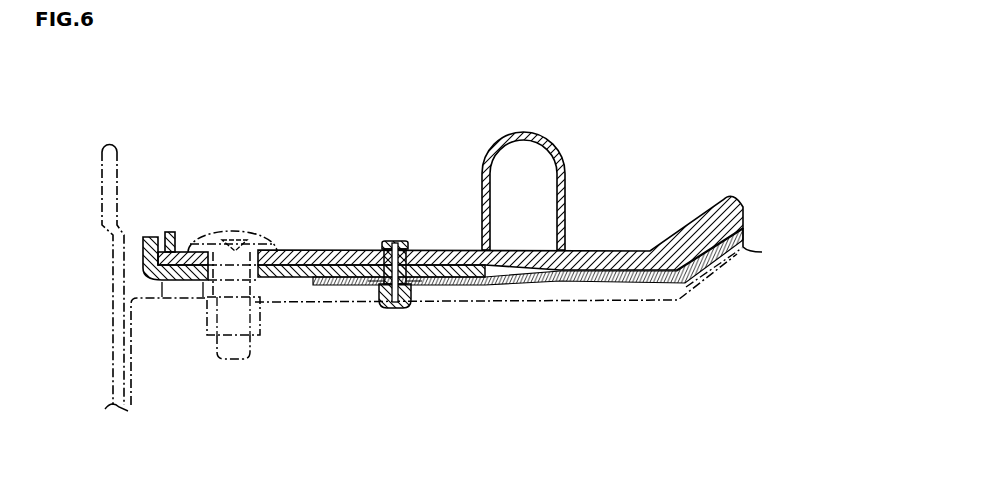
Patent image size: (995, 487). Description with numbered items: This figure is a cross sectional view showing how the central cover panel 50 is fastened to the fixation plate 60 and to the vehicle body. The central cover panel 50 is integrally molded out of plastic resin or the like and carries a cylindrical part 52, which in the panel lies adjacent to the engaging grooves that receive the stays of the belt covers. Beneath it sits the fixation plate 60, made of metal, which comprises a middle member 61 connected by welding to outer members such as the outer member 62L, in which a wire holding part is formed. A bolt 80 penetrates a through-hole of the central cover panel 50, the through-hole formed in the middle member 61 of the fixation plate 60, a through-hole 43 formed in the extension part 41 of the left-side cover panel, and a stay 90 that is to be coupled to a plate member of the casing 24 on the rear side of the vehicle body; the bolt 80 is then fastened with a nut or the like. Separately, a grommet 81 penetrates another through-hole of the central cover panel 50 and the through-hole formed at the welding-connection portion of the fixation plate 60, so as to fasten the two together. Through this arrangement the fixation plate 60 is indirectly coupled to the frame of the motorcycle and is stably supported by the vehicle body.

The casing 24 is at (102, 226).
The extension part 41 is at (490, 302).
The through-hole 43 is at (236, 296).
The central cover panel 50 is at (677, 232).
The cylindrical part 52 is at (512, 132).
The fixation plate 60 is at (151, 232).
The middle member 61 is at (294, 282).
The outer member 62L is at (537, 283).
The bolt 80 is at (256, 238).
The grommet 81 is at (405, 242).
The stay 90 is at (173, 302).